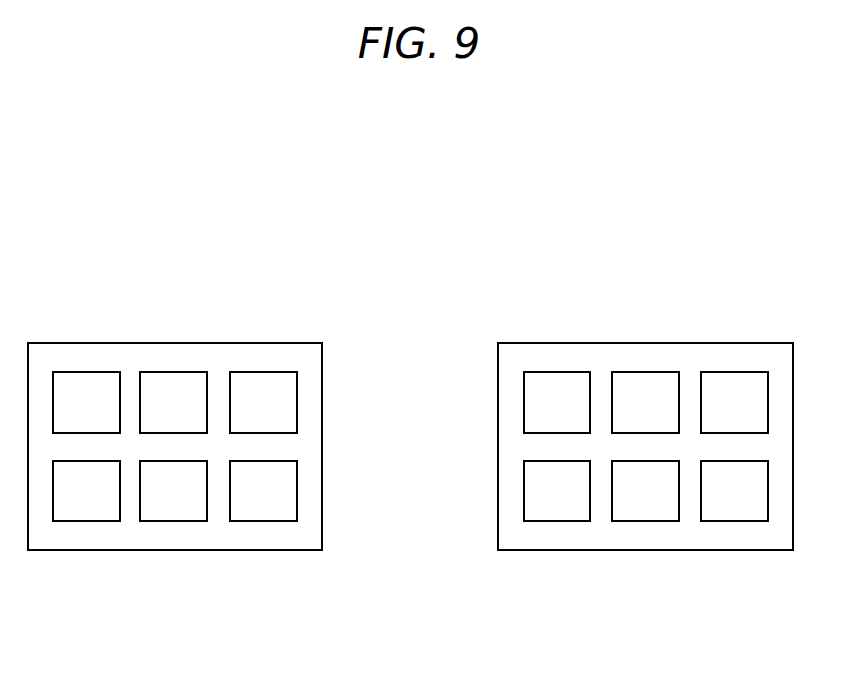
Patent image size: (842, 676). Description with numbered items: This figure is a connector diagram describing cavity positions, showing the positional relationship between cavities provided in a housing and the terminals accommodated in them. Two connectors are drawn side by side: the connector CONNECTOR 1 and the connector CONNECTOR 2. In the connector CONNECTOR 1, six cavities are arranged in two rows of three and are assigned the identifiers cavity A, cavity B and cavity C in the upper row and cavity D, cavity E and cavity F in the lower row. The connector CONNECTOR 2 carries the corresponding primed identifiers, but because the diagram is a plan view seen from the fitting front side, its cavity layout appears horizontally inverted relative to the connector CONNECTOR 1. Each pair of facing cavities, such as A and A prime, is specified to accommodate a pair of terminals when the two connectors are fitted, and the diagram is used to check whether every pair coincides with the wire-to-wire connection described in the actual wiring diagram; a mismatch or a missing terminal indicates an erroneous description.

The connector CONNECTOR 1 is at (98, 599).
The connector CONNECTOR 2 is at (569, 599).
The cavity A is at (86, 402).
The cavity B is at (173, 402).
The cavity C is at (263, 402).
The cavity D is at (86, 491).
The cavity E is at (173, 491).
The cavity F is at (263, 491).